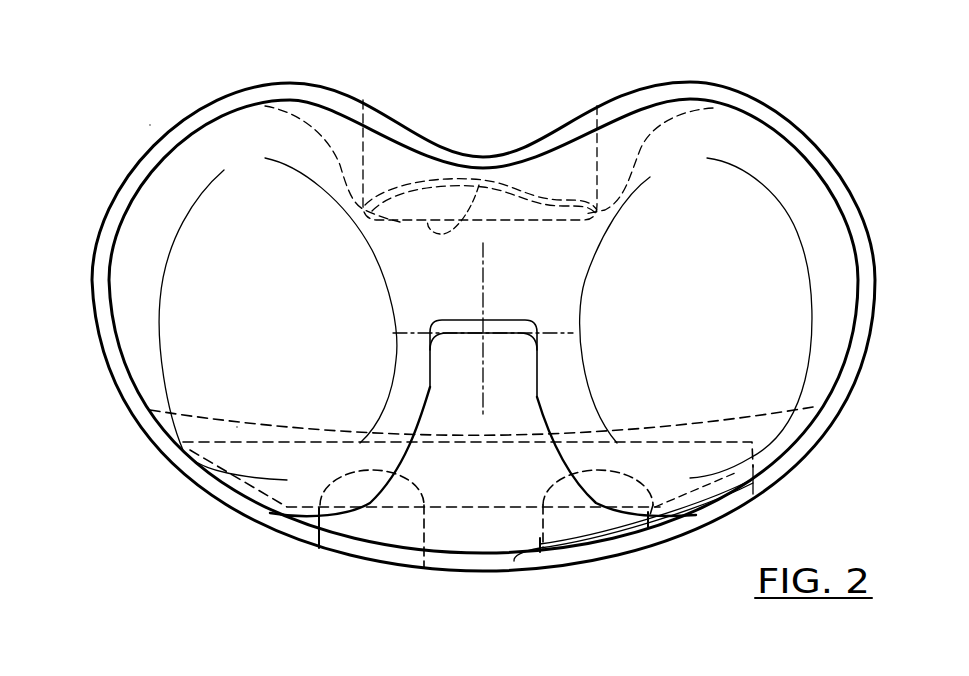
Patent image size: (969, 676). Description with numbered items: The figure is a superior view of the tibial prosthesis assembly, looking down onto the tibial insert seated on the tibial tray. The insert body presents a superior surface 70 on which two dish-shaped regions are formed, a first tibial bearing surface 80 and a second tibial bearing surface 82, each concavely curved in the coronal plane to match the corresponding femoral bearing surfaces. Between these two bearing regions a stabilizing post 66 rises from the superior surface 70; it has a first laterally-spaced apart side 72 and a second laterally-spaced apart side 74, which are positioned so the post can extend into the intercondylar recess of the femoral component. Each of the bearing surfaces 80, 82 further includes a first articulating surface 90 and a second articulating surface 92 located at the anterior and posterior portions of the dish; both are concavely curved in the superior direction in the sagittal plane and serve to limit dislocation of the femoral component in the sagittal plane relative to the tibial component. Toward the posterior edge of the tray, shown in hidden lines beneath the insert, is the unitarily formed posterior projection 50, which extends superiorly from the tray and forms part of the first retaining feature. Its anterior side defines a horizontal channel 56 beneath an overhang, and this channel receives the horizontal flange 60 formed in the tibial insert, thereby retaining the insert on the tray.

The posterior projection 50 is at (390, 167).
The horizontal channel 56 is at (479, 185).
The horizontal flange 60 is at (540, 190).
The stabilizing post 66 is at (457, 370).
The superior surface 70 is at (313, 228).
The first laterally-spaced apart side 72 is at (537, 397).
The second laterally-spaced apart side 74 is at (430, 387).
The first tibial bearing surface 80 is at (788, 268).
The second tibial bearing surface 82 is at (205, 238).
The first articulating surface 90 is at (237, 427).
The second articulating surface 92 is at (247, 193).